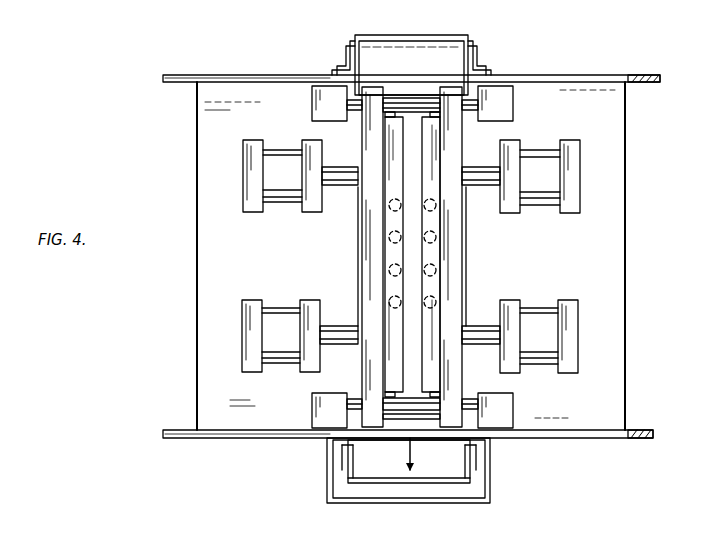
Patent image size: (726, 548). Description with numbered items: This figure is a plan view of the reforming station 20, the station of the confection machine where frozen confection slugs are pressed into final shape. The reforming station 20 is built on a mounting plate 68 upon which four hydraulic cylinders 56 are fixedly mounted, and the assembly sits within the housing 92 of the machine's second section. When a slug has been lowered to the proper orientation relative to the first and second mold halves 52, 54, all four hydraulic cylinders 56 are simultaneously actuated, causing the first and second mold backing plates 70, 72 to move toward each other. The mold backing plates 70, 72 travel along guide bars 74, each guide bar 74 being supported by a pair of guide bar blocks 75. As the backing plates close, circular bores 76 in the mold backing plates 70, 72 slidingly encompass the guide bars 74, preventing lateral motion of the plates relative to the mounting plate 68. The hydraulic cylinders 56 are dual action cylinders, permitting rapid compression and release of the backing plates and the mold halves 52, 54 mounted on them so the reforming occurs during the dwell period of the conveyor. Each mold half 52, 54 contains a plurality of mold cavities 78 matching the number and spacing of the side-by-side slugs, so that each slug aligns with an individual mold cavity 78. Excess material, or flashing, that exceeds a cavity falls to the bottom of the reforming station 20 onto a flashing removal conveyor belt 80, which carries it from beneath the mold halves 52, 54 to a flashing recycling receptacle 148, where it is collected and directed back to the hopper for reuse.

The reforming station 20 is at (648, 141).
The first mold half 52 is at (392, 223).
The second mold half 54 is at (435, 224).
The hydraulic cylinders 56 is at (266, 176).
The mounting plate 68 is at (618, 389).
The first mold backing plate 70 is at (369, 248).
The second mold backing plate 72 is at (455, 250).
The guide bars 74 is at (398, 115).
The guide bar blocks 75 is at (313, 103).
The circular bores 76 is at (437, 97).
The mold cavities 78 is at (395, 271).
The flashing removal conveyor belt 80 is at (455, 458).
The housing 92 is at (656, 76).
The flashing recycling receptacle 148 is at (327, 470).